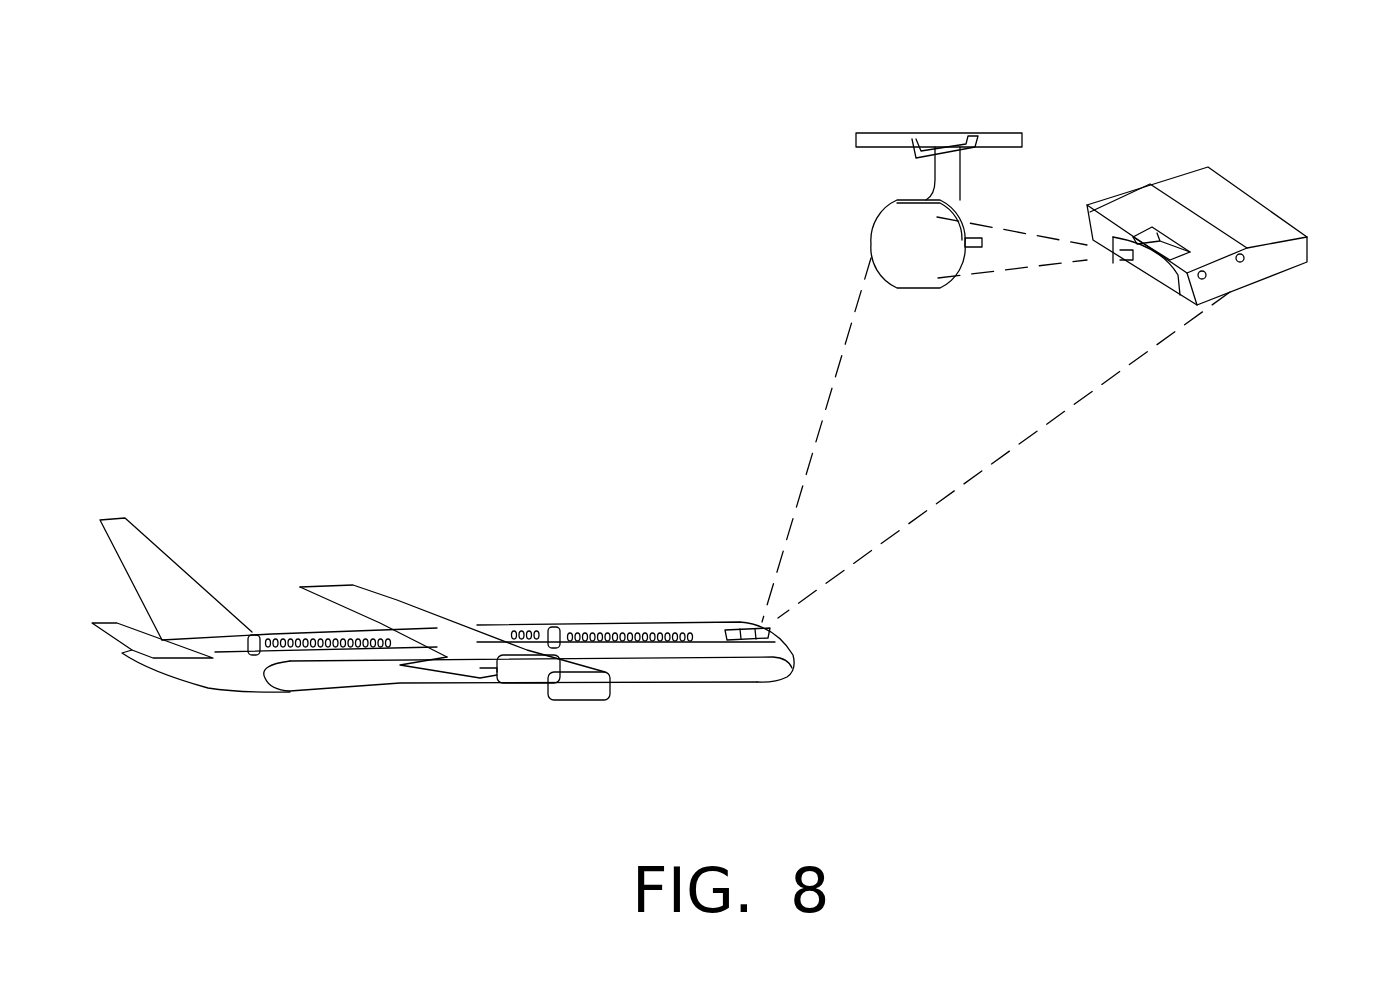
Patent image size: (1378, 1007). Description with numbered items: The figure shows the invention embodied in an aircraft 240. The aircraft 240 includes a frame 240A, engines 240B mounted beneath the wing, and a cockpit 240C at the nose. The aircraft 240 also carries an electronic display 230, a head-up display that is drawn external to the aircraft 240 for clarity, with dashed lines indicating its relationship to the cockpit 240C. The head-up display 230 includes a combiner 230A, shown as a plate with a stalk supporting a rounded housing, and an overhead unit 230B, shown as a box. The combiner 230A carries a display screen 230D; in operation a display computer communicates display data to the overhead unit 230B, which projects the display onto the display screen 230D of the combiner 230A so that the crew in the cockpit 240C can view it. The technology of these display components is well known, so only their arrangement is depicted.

The head-up display 230 is at (1128, 135).
The combiner 230A is at (893, 132).
The overhead unit 230B is at (1215, 205).
The display screen 230D is at (912, 263).
The aircraft 240 is at (573, 612).
The frame 240A is at (682, 688).
The engines 240B is at (568, 692).
The cockpit 240C is at (790, 627).